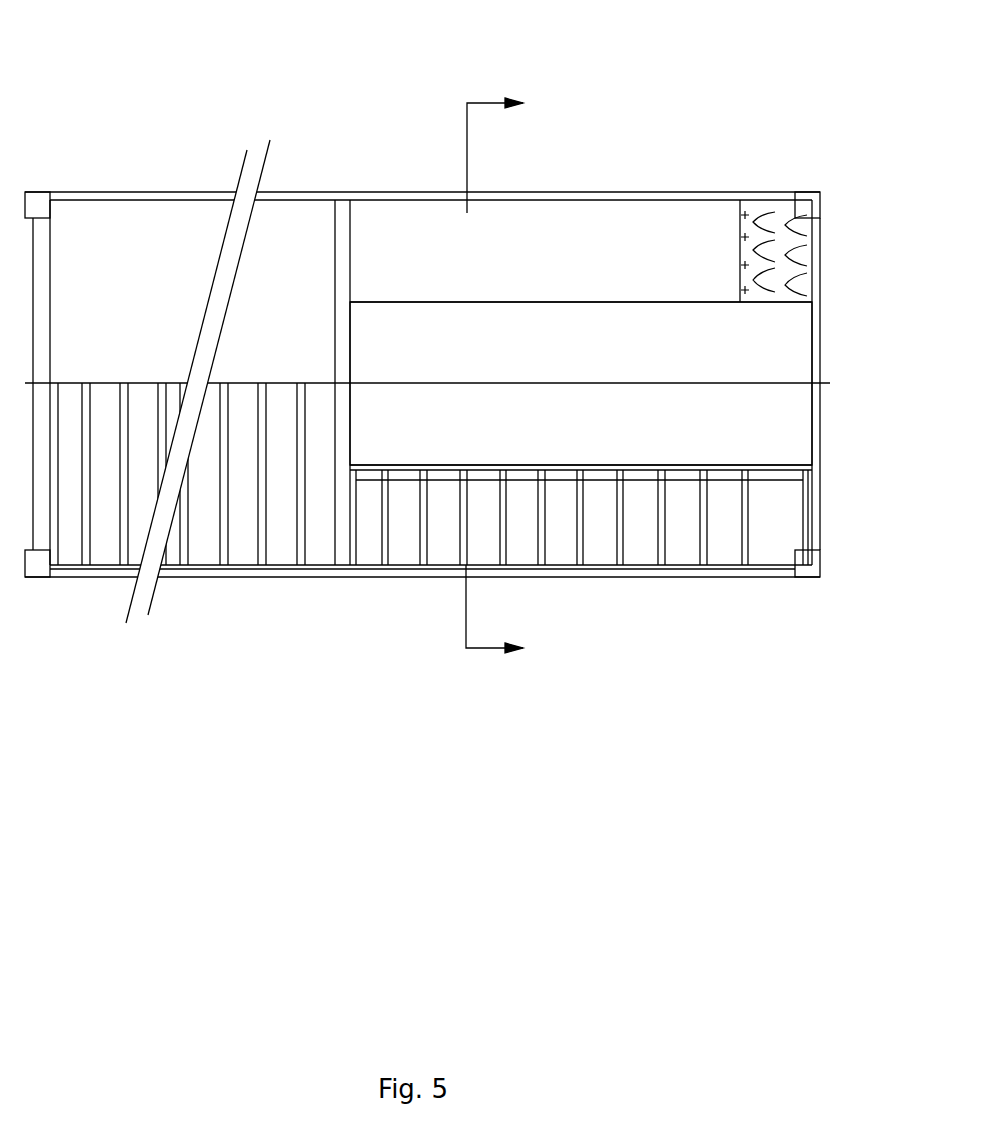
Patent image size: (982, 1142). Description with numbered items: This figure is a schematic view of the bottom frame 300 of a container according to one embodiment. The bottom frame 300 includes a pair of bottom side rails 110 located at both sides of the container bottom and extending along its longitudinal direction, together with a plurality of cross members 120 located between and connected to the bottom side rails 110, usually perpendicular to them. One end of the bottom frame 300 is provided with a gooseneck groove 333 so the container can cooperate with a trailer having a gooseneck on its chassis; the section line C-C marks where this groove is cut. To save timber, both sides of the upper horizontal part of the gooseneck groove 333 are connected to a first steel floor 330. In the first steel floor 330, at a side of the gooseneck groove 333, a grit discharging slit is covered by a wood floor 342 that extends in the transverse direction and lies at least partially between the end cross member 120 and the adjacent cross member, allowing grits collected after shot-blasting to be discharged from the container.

The bottom frame 300 is at (95, 35).
The bottom side rail 110 is at (93, 193).
The cross member 120 is at (578, 518).
The first steel floor 330 is at (688, 250).
The gooseneck groove 333 is at (617, 353).
The wood floor 342 is at (803, 238).